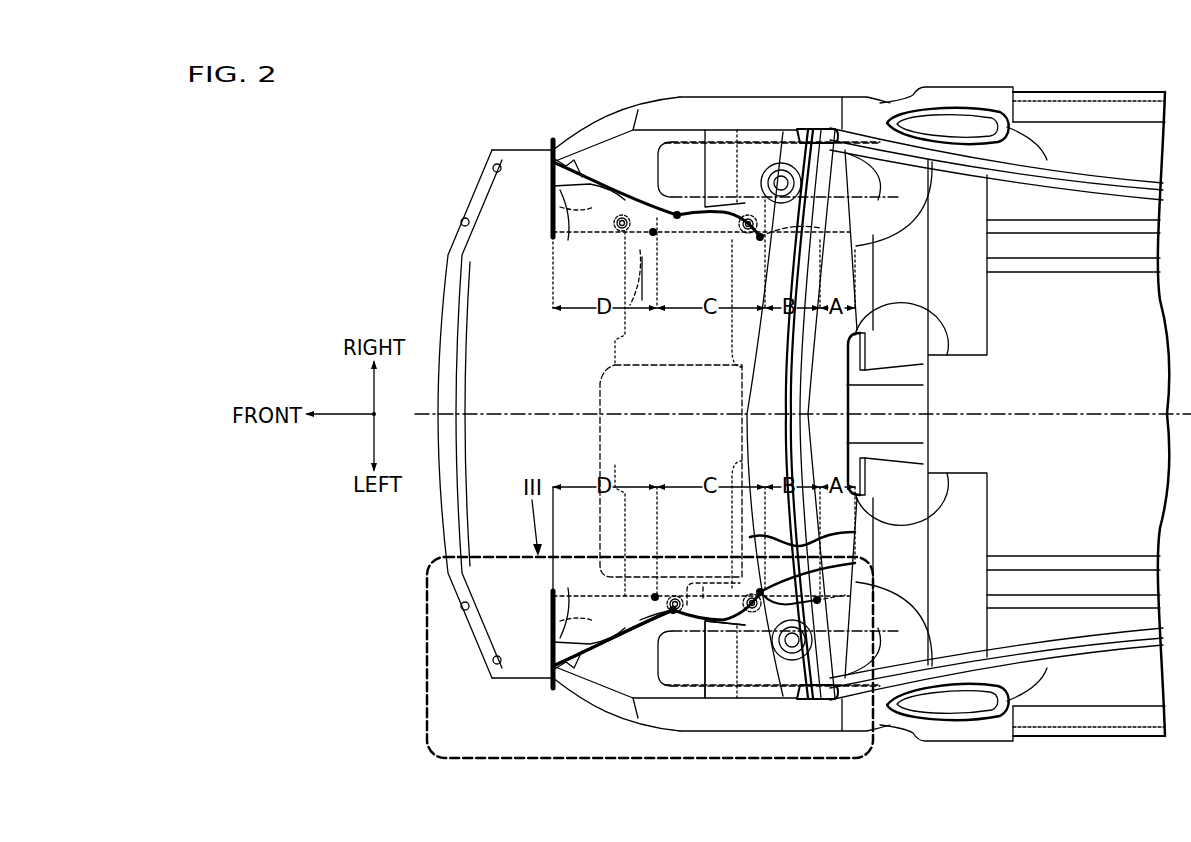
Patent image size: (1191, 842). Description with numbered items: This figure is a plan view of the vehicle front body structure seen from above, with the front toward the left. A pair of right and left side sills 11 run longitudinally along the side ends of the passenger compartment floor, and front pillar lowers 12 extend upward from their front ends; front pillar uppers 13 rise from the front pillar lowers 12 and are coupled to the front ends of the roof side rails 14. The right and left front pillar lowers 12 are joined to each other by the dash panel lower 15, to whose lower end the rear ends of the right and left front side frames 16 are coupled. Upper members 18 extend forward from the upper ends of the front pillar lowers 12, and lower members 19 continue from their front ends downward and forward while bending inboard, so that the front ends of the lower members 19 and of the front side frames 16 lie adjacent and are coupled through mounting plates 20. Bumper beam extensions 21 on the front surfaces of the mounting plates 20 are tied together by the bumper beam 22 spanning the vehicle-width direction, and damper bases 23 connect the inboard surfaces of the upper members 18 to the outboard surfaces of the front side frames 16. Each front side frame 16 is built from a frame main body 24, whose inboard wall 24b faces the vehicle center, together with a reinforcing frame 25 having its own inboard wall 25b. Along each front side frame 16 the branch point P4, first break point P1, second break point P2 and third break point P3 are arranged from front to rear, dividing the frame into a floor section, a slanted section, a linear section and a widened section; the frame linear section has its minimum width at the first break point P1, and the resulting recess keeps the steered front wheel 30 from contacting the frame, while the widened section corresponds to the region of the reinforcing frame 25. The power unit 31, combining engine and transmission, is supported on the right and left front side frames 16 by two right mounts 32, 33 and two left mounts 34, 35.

The side sill 11 is at (1113, 95).
The front pillar lower 12 is at (980, 92).
The front pillar upper 13 is at (972, 165).
The roof side rail 14 is at (1108, 182).
The dash panel lower 15 is at (847, 402).
The front side frame 16 is at (727, 296).
The upper member 18 is at (797, 106).
The lower member 19 is at (591, 128).
The mounting plate 20 is at (594, 235).
The bumper beam extension 21 is at (513, 222).
The bumper beam 22 is at (450, 298).
The damper base 23 is at (770, 150).
The frame main body 24 is at (629, 318).
The vehicle-width-direction inboard wall 24b is at (607, 272).
The reinforcing frame 25 is at (602, 166).
The vehicle-width-direction inboard wall 25b is at (555, 200).
The front wheel 30 is at (717, 140).
The power unit 31 is at (598, 396).
The right mount 32 is at (621, 232).
The right mount 33 is at (745, 216).
The left mount 34 is at (672, 622).
The left mount 35 is at (733, 606).
The first break point P1 is at (770, 414).
The second break point P2 is at (760, 242).
The third break point P3 is at (862, 244).
The branch point P4 is at (677, 220).